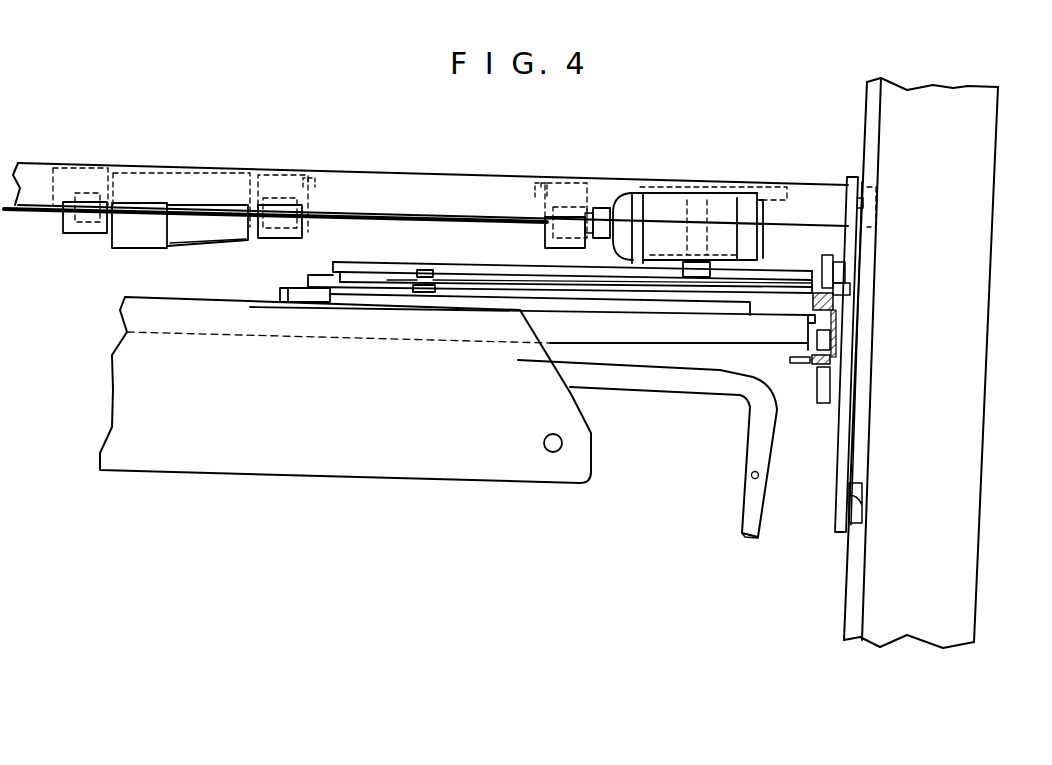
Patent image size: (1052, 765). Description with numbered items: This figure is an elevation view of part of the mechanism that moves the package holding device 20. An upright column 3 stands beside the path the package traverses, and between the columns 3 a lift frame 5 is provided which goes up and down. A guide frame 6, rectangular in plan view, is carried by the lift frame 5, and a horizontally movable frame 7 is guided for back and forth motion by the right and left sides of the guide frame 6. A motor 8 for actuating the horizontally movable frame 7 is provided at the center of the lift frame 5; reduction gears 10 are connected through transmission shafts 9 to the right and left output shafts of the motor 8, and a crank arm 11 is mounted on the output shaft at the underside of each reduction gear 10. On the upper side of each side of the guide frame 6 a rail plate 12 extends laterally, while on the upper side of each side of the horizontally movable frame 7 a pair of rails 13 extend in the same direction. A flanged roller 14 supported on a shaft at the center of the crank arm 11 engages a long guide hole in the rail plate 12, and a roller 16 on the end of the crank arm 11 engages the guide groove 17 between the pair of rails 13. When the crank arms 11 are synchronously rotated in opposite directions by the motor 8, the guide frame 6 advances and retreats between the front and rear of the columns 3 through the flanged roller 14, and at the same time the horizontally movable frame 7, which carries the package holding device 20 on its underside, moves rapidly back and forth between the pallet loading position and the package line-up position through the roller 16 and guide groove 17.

The upright column 3 is at (980, 223).
The lift frame 5 is at (377, 172).
The guide frame 6 is at (838, 323).
The horizontally movable frame 7 is at (678, 340).
The motor 8 is at (212, 247).
The transmission shaft 9 is at (33, 212).
The reduction gear 10 is at (750, 250).
The crank arm 11 is at (513, 272).
The rail plate 12 is at (472, 277).
The rail 13 is at (327, 302).
The roller with flanges 14 is at (423, 293).
The roller 16 is at (308, 288).
The guide groove 17 is at (290, 288).
The package holding device 20 is at (335, 492).